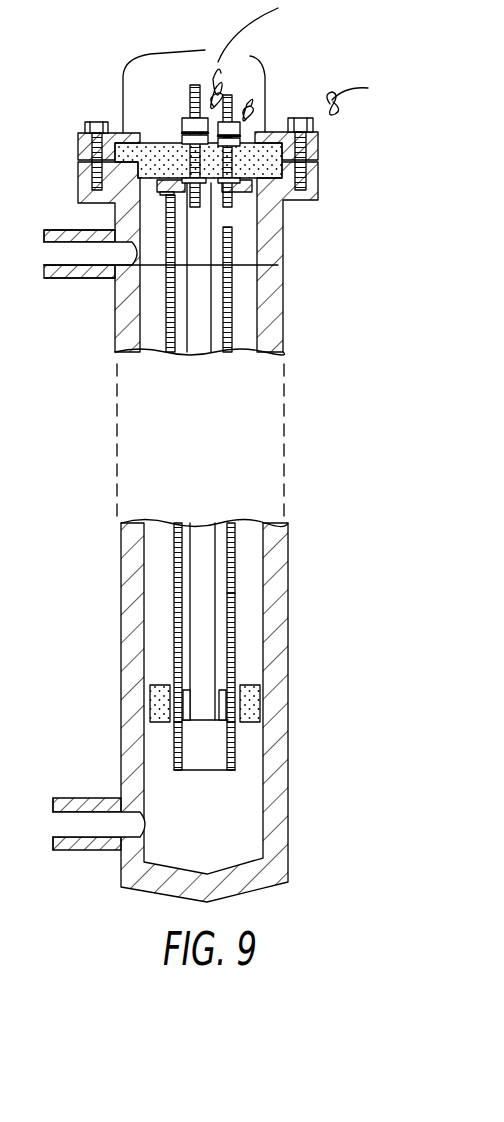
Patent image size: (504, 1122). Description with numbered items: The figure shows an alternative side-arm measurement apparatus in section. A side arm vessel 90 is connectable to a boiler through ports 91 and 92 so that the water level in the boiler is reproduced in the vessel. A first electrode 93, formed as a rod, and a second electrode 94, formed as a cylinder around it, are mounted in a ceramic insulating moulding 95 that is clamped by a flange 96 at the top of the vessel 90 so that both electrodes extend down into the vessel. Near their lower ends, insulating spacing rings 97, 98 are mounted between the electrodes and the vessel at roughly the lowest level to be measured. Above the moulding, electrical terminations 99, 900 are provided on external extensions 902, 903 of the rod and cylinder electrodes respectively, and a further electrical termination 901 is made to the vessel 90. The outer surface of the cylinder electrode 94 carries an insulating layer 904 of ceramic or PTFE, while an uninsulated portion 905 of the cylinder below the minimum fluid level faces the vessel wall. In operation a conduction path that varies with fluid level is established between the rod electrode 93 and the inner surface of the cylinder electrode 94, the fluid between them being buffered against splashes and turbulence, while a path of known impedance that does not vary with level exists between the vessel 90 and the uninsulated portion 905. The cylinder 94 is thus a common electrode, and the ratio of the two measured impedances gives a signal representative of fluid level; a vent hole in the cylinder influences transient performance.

The side arm vessel 90 is at (278, 305).
The port 91 is at (55, 272).
The port 92 is at (73, 805).
The first electrode 93 is at (203, 533).
The second electrode 94 is at (228, 552).
The ceramic insulating moulding 95 is at (290, 164).
The flange 96 is at (82, 147).
The insulating spacing ring 97 is at (225, 700).
The insulating spacing ring 98 is at (255, 712).
The electrical termination 99 is at (195, 82).
The electrical termination 900 is at (228, 96).
The electrical termination 901 is at (313, 133).
The external extension 902 is at (188, 100).
The external extension 903 is at (233, 98).
The insulating layer 904 is at (235, 603).
The uninsulated portion 905 is at (228, 218).